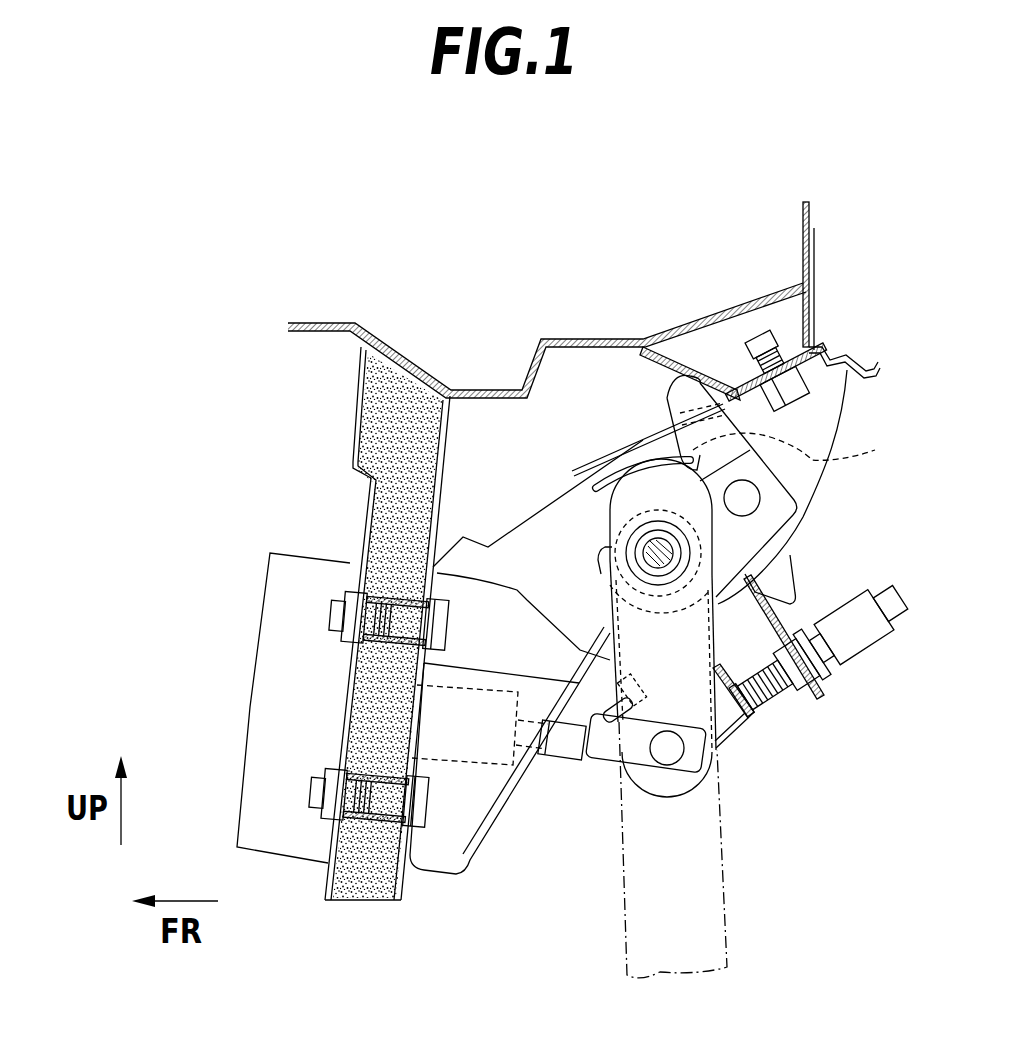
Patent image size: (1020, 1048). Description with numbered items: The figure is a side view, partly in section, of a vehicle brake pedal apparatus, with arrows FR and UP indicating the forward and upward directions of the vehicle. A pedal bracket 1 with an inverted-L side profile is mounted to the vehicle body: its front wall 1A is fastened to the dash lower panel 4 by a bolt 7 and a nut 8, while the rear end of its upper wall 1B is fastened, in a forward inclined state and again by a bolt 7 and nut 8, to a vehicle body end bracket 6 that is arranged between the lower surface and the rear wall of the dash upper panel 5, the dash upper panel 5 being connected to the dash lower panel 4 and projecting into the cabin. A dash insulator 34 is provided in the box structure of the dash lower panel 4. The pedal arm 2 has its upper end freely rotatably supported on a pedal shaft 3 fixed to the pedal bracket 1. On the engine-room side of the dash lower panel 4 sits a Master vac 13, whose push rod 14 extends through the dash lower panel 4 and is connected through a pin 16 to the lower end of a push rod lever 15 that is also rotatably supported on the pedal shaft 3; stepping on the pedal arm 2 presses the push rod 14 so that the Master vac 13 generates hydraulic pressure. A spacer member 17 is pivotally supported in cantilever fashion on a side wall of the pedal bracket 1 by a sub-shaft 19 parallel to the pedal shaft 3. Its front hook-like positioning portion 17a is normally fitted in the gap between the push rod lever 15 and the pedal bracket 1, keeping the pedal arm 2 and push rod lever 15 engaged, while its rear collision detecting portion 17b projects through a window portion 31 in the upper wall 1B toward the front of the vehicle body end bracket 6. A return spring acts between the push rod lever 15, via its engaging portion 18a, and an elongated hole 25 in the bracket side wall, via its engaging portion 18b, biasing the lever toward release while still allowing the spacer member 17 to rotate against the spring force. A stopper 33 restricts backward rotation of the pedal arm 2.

The pedal bracket 1 is at (550, 650).
The front wall 1A is at (418, 848).
The upper wall 1B is at (590, 463).
The pedal arm 2 is at (623, 955).
The pedal shaft 3 is at (610, 566).
The dash lower panel 4 is at (366, 527).
The dash upper panel 5 is at (808, 217).
The vehicle body end bracket 6 is at (817, 290).
The bolt 7 is at (798, 398).
The nut 8 is at (757, 368).
The Master vac 13 is at (262, 860).
The push rod 14 is at (568, 748).
The push rod lever 15 is at (655, 793).
The pin 16 is at (683, 767).
The spacer member 17 is at (778, 477).
The positioning portion 17a is at (602, 558).
The collision detecting portion 17b is at (677, 380).
The engaging portion 18a is at (640, 688).
The engaging portion 18b is at (808, 448).
The sub-shaft 19 is at (762, 495).
The elongated hole 25 is at (650, 458).
The window portion 31 is at (612, 450).
The stopper 33 is at (753, 717).
The dash insulator 34 is at (349, 888).